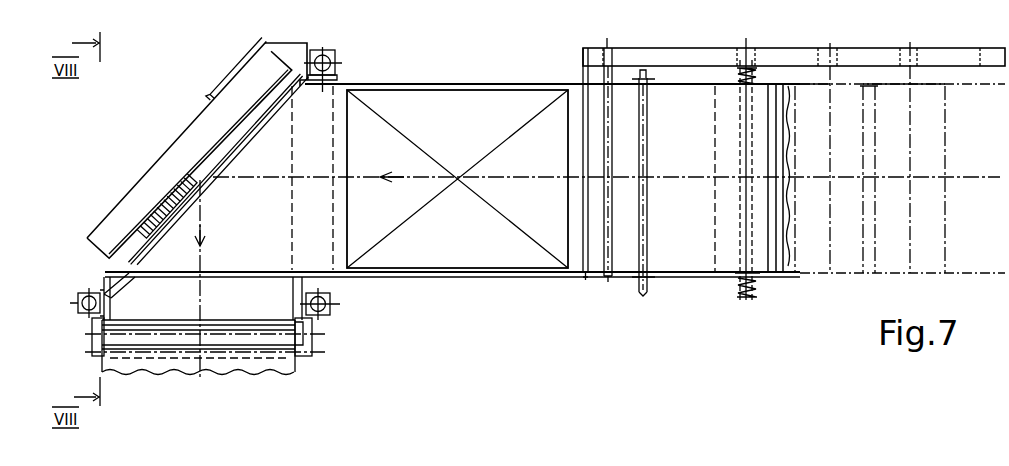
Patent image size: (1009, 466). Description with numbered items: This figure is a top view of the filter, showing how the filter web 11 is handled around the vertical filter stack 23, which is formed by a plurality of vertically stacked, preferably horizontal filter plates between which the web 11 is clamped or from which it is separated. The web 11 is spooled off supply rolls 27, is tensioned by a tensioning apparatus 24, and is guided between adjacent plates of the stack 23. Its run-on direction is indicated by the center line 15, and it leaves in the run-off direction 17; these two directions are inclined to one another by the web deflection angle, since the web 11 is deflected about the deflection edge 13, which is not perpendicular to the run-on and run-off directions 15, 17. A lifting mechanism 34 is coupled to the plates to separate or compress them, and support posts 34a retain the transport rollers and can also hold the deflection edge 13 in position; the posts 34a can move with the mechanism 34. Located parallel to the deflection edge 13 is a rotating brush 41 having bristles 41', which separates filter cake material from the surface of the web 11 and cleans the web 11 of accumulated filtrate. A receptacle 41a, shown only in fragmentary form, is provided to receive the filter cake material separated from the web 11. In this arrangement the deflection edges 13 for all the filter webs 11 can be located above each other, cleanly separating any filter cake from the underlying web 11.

The filter web 11 is at (243, 376).
The deflection edge 13 is at (102, 288).
The run-on direction center line 15 is at (400, 177).
The run-off direction 17 is at (204, 213).
The vertical filter stack 23 is at (470, 134).
The tensioning apparatus 24 is at (641, 258).
The supply rolls 27 is at (924, 83).
The lifting mechanism 34 is at (323, 50).
The support posts 34a is at (70, 312).
The rotating brush 41 is at (197, 157).
The receptacle 41a is at (230, 85).
The bristles 41' is at (152, 195).